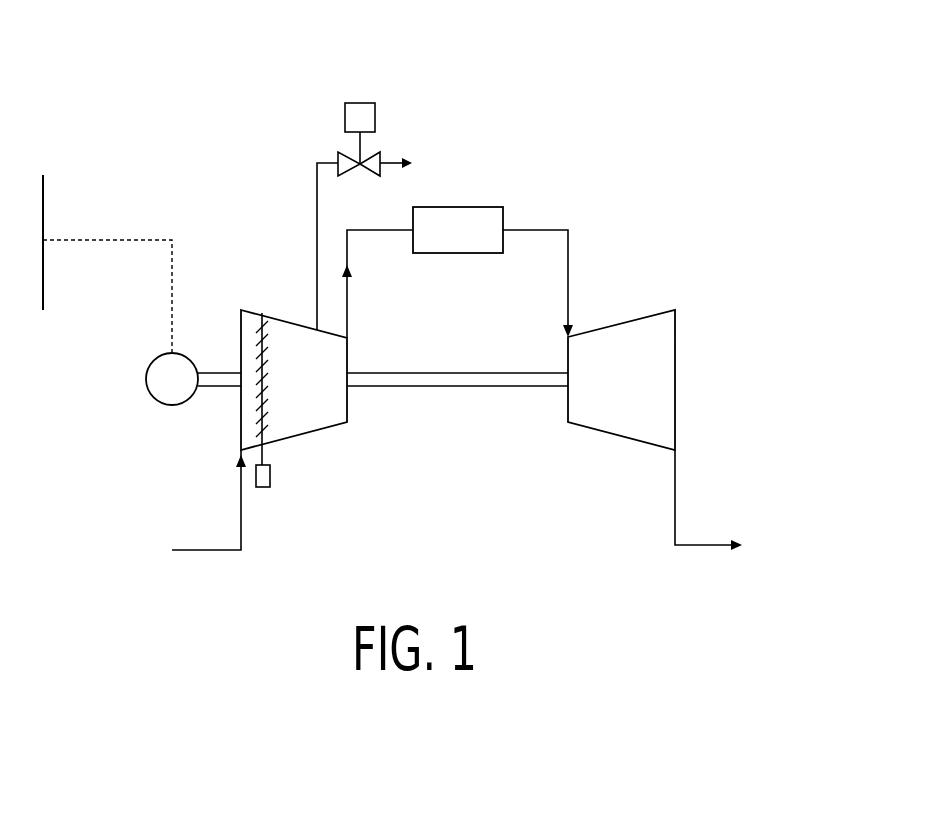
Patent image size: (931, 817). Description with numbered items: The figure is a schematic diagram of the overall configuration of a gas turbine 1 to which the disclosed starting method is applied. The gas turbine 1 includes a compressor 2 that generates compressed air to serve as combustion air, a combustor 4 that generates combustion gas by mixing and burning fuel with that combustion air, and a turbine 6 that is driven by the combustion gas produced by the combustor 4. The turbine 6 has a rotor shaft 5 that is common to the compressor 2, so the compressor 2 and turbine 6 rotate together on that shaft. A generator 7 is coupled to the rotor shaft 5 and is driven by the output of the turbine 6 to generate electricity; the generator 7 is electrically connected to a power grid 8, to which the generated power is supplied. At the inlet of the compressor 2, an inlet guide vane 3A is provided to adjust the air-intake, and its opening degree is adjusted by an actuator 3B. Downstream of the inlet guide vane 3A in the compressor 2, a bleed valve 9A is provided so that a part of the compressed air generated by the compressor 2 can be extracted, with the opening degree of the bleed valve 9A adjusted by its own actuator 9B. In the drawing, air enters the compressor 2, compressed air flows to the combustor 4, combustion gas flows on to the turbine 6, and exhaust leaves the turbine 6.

The gas turbine 1 is at (274, 86).
The compressor 2 is at (313, 432).
The inlet guide vane 3A is at (265, 316).
The actuator 3B is at (262, 487).
The combustor 4 is at (460, 207).
The rotor shaft 5 is at (461, 388).
The turbine 6 is at (618, 322).
The generator 7 is at (172, 405).
The power grid 8 is at (45, 190).
The bleed valve 9A is at (338, 152).
The actuator 9B is at (375, 112).